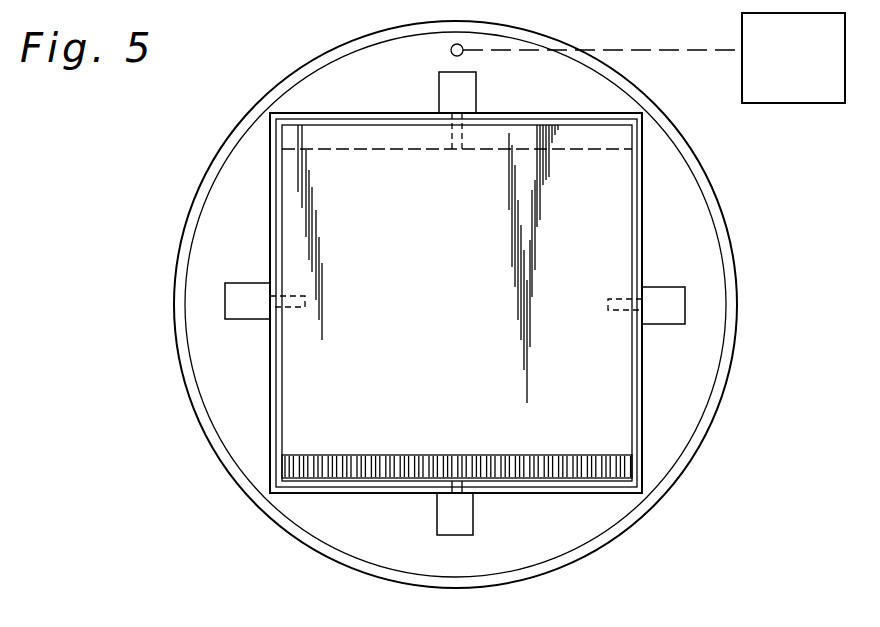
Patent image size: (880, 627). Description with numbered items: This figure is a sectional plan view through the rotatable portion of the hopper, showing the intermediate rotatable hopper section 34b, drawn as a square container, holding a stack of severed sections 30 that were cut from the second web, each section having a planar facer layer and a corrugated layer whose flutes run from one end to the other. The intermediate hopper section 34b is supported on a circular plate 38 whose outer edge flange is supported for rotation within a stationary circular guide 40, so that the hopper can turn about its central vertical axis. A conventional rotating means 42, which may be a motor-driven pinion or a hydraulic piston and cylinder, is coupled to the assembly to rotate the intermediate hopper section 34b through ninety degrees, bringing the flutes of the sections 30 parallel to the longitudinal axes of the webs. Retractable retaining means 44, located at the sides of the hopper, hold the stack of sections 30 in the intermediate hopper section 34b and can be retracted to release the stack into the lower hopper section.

The severed sections 30 is at (466, 278).
The intermediate rotatable hopper section 34b is at (374, 112).
The circular plate 38 is at (381, 53).
The stationary circular guide 40 is at (727, 229).
The rotating means 42 is at (795, 104).
The retractable retaining means 44 is at (476, 89).